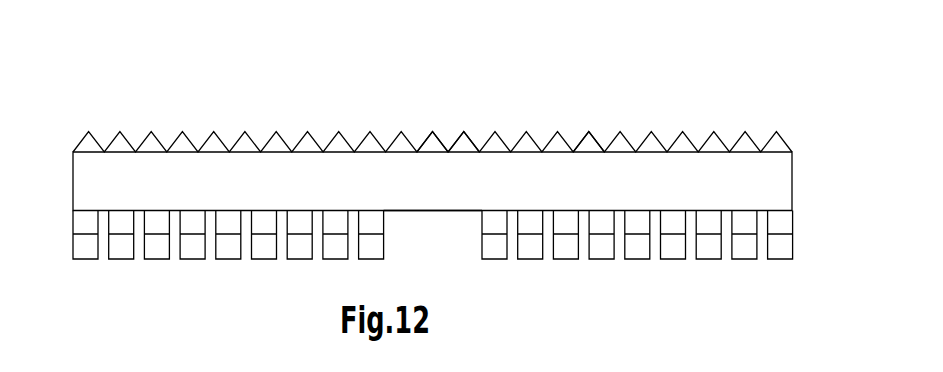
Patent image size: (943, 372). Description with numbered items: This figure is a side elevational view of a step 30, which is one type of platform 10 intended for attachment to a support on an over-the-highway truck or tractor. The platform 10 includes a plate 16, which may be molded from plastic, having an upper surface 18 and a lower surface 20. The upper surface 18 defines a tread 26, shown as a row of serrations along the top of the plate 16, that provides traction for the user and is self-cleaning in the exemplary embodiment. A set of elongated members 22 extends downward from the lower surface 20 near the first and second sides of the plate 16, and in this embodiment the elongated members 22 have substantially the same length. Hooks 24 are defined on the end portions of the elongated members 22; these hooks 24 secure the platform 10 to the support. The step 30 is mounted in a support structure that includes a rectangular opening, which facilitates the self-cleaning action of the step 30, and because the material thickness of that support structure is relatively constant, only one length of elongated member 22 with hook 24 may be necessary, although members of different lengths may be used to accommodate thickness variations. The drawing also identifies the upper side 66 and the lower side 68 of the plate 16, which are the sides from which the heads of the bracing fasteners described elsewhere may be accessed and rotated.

The platform 10 is at (419, 190).
The plate 16 is at (185, 167).
The upper surface 18 is at (277, 142).
The lower surface 20 is at (403, 210).
The elongated members 22 is at (85, 232).
The hooks 24 is at (118, 248).
The tread 26 is at (588, 147).
The step 30 is at (433, 105).
The upper side 66 is at (465, 125).
The lower side 68 is at (462, 280).